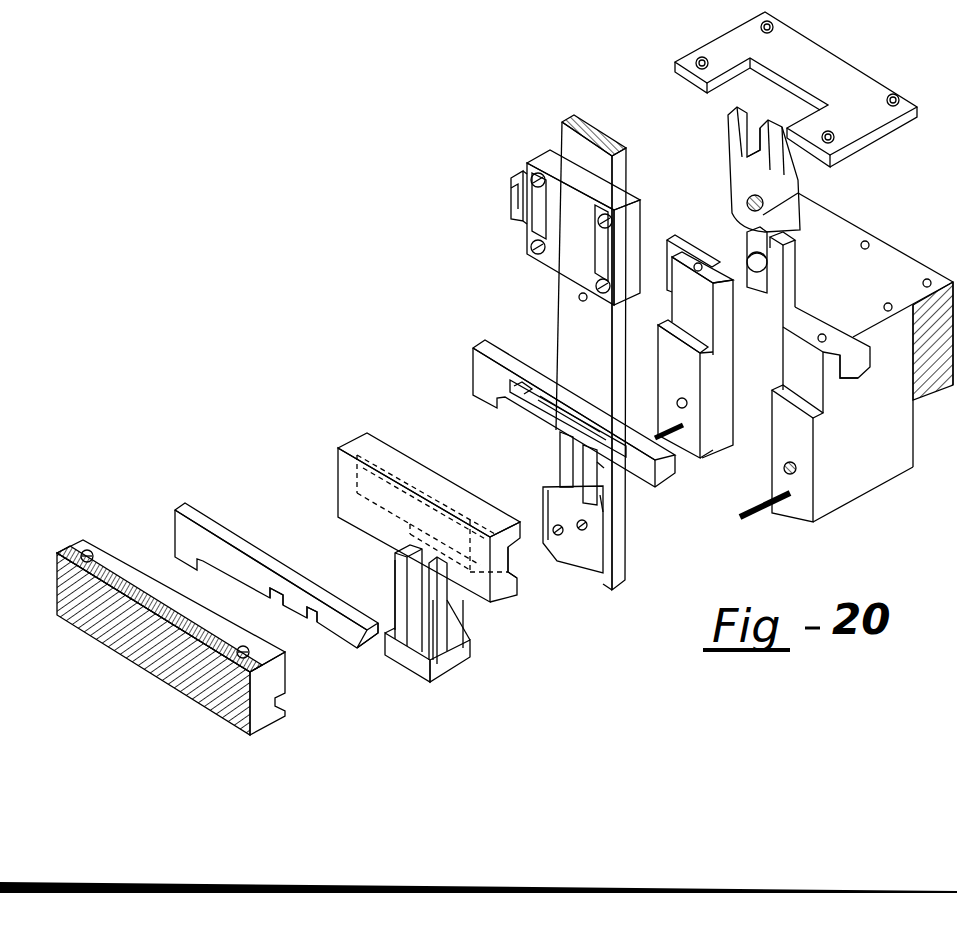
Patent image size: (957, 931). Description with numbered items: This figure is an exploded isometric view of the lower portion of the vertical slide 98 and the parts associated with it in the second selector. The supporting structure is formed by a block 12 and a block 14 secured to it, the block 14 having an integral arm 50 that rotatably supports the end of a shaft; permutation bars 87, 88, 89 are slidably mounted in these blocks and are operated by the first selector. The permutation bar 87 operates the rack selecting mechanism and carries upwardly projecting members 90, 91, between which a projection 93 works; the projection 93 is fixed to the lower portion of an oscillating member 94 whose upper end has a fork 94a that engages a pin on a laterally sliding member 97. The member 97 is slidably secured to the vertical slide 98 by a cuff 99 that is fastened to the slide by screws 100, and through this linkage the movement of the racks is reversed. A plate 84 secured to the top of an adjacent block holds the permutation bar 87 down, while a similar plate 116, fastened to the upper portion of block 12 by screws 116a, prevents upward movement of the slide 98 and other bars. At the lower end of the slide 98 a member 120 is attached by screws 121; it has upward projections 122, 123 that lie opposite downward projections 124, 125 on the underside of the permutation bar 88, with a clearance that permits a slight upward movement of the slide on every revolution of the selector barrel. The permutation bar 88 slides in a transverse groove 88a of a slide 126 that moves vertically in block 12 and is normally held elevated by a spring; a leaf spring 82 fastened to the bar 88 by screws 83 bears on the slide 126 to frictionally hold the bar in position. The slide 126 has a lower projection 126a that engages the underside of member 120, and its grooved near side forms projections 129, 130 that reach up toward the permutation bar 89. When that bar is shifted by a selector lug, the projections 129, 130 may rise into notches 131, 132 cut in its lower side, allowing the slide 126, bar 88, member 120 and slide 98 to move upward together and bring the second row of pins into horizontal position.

The block 12 is at (272, 718).
The block 14 is at (884, 470).
The arm 50 is at (930, 392).
The leaf spring 82 is at (572, 410).
The screws 83 is at (527, 385).
The plate 84 is at (878, 90).
The permutation bar 87 is at (862, 376).
The permutation bar 88 is at (680, 472).
The transverse groove 88a is at (516, 573).
The permutation bar 89 is at (362, 640).
The upwardly projecting member 90 is at (727, 224).
The upwardly projecting member 91 is at (790, 292).
The projection 93 is at (767, 264).
The member 94 is at (764, 169).
The fork 94a is at (744, 137).
The laterally sliding member 97 is at (513, 199).
The vertical slide 98 is at (600, 140).
The cuff 99 is at (583, 227).
The screws 100 is at (600, 218).
The plate 116 is at (133, 568).
The screws 116a is at (90, 550).
The member 120 is at (606, 560).
The screws 121 is at (560, 535).
The vertically disposed projection 122 is at (604, 508).
The vertically disposed projection 123 is at (580, 480).
The projection 124 is at (604, 470).
The projection 125 is at (562, 448).
The slide 126 is at (357, 446).
The projection 126a is at (472, 656).
The projection 129 is at (436, 600).
The projection 130 is at (404, 556).
The notch 131 is at (310, 624).
The notch 132 is at (270, 604).